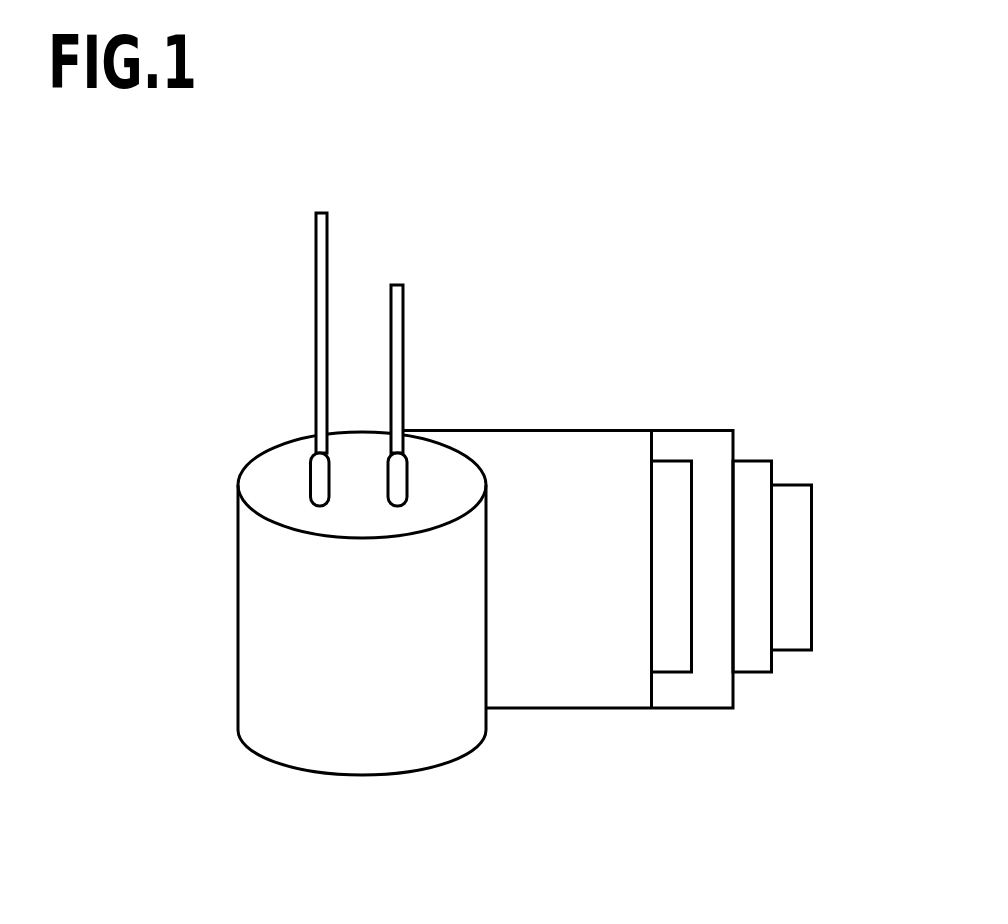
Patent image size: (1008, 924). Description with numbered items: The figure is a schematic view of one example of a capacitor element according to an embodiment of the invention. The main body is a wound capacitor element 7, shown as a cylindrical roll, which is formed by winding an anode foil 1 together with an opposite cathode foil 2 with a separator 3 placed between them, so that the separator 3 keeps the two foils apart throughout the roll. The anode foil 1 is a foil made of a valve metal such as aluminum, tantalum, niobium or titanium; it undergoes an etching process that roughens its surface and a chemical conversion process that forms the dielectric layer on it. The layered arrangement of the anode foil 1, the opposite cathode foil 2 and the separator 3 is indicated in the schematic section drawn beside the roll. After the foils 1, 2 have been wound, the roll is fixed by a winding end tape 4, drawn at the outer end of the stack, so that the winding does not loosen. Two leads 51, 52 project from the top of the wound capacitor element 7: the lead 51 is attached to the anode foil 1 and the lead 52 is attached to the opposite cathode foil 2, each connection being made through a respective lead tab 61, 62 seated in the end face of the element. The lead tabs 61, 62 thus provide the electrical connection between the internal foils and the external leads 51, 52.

The anode foil 1 is at (672, 655).
The opposite cathode foil 2 is at (758, 655).
The separator 3 is at (597, 695).
The winding end tape 4 is at (795, 517).
The wound capacitor element 7 is at (252, 601).
The lead 51 is at (320, 363).
The lead 52 is at (397, 370).
The lead tab 61 is at (320, 472).
The lead tab 62 is at (397, 463).